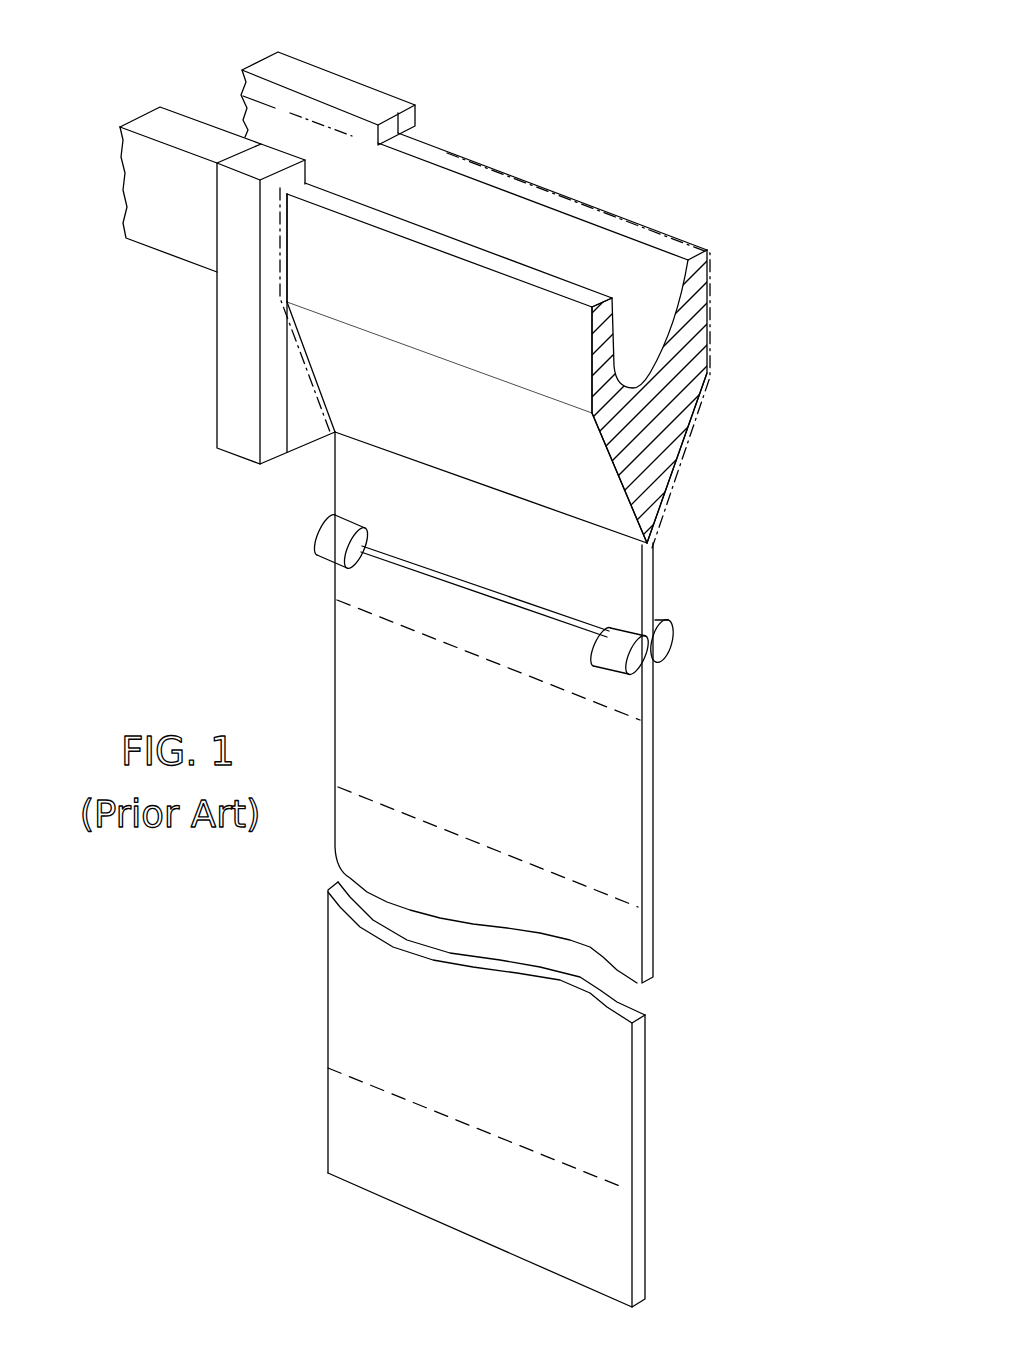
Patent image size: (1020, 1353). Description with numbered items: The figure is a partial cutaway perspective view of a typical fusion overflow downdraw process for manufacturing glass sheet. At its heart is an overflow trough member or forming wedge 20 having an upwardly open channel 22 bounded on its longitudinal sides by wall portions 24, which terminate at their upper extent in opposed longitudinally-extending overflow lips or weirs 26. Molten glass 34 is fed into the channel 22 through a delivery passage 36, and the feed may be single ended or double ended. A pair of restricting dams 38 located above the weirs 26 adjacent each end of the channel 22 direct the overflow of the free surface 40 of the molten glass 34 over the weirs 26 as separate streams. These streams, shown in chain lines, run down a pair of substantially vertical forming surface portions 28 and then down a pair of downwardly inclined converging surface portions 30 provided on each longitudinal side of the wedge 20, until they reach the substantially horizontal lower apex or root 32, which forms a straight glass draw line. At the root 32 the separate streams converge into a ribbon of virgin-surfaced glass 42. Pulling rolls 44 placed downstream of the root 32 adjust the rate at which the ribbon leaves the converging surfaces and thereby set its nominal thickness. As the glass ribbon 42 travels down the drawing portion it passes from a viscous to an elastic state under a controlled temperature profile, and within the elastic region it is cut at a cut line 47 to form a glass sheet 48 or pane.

The forming wedge 20 is at (558, 386).
The upwardly open channel 22 is at (653, 347).
The wall portions 24 is at (649, 283).
The overflow weirs 26 is at (540, 187).
The vertical forming surface portions 28 is at (427, 300).
The converging surface portions 30 is at (557, 452).
The root 32 is at (517, 500).
The molten glass 34 is at (284, 241).
The delivery passage 36 is at (187, 140).
The restricting dams 38 is at (300, 172).
The free surface of molten glass 40 is at (540, 227).
The glass ribbon 42 is at (620, 943).
The pulling rolls 44 is at (333, 553).
The cut line 47 is at (383, 1092).
The glass sheet 48 is at (495, 1094).